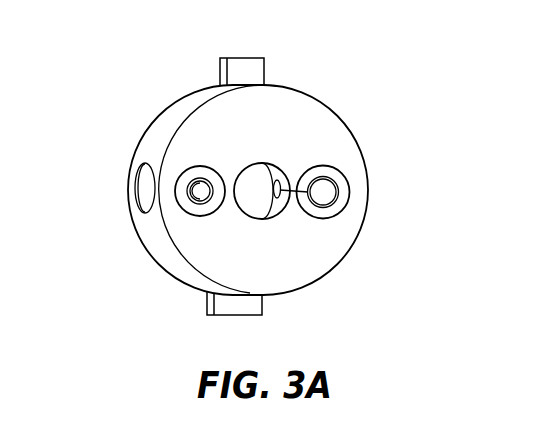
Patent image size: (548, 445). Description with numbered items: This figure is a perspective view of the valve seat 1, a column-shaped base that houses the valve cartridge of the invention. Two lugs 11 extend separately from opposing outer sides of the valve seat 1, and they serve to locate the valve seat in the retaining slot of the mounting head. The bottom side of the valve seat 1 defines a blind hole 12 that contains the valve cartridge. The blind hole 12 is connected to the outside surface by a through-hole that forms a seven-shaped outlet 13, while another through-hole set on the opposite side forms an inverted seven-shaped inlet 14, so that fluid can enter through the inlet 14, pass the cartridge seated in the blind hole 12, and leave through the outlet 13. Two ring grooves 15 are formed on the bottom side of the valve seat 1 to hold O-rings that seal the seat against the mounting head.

The valve seat 1 is at (323, 132).
The lugs 11 is at (252, 70).
The blind hole 12 is at (244, 206).
The outlet 13 is at (333, 206).
The inlet 14 is at (202, 192).
The ring grooves 15 is at (337, 176).